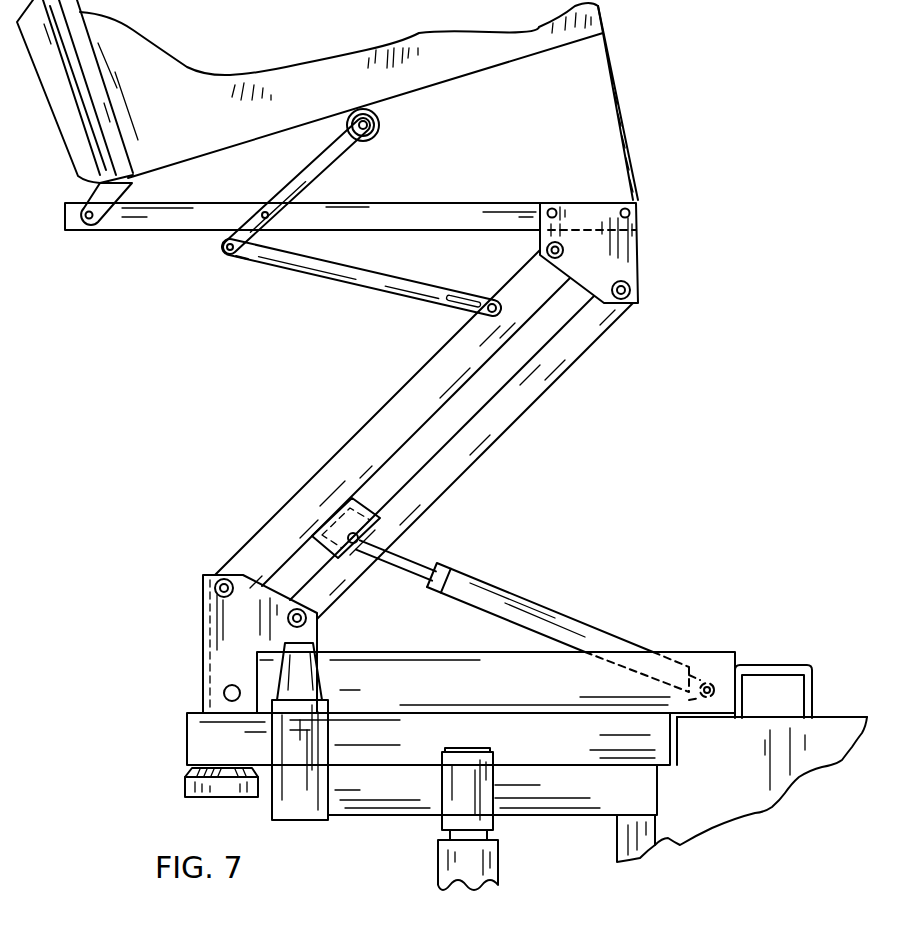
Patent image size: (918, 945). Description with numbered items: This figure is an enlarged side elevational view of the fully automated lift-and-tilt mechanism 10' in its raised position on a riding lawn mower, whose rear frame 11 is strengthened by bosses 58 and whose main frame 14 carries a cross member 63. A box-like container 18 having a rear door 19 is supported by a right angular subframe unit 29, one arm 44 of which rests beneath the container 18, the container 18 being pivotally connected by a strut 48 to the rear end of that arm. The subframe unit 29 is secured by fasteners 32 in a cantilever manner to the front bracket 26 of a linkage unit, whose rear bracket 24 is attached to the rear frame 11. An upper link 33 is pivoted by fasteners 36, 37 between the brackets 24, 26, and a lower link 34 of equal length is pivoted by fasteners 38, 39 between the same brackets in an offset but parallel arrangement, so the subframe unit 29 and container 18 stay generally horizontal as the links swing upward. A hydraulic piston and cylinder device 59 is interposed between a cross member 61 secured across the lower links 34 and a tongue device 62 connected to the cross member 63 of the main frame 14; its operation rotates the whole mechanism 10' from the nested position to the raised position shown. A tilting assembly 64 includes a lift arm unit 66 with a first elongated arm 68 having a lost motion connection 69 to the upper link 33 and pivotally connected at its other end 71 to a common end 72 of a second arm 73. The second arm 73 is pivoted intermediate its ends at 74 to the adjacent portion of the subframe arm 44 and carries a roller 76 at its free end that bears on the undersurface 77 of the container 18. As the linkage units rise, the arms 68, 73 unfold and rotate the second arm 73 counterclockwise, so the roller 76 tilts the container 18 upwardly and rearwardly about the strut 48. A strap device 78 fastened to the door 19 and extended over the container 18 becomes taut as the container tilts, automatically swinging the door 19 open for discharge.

The fully automated lift-and-tilt mechanism 10' is at (196, 465).
The mower rear frame 11 is at (480, 638).
The mower main frame 14 is at (735, 800).
The container 18 is at (170, 73).
The rear door 19 is at (63, 120).
The rear bracket 24 is at (228, 647).
The front bracket 26 is at (620, 253).
The subframe unit 29 is at (407, 186).
The fasteners 32 is at (551, 207).
The upper link 33 is at (387, 427).
The lower link 34 is at (478, 442).
The fastener 36 is at (210, 585).
The fastener 37 is at (539, 248).
The fastener 38 is at (306, 620).
The fastener 39 is at (632, 290).
The subframe unit arm 44 is at (150, 218).
The strut 48 is at (102, 220).
The boss 58 is at (293, 787).
The hydraulic piston and cylinder device 59 is at (525, 613).
The cross member 61 is at (363, 512).
The tongue device 62 is at (720, 660).
The cross member 63 is at (762, 665).
The tilting assembly 64 is at (326, 314).
The lift arm unit 66 is at (390, 308).
The first elongated arm 68 is at (313, 272).
The lost motion connection 69 is at (488, 300).
The other end of first arm 71 is at (253, 253).
The common end of second arm 72 is at (227, 235).
The second arm 73 is at (318, 168).
The pivotal connection 74 is at (260, 212).
The roller 76 is at (381, 125).
The undersurface of container 77 is at (456, 77).
The strap device 78 is at (622, 132).